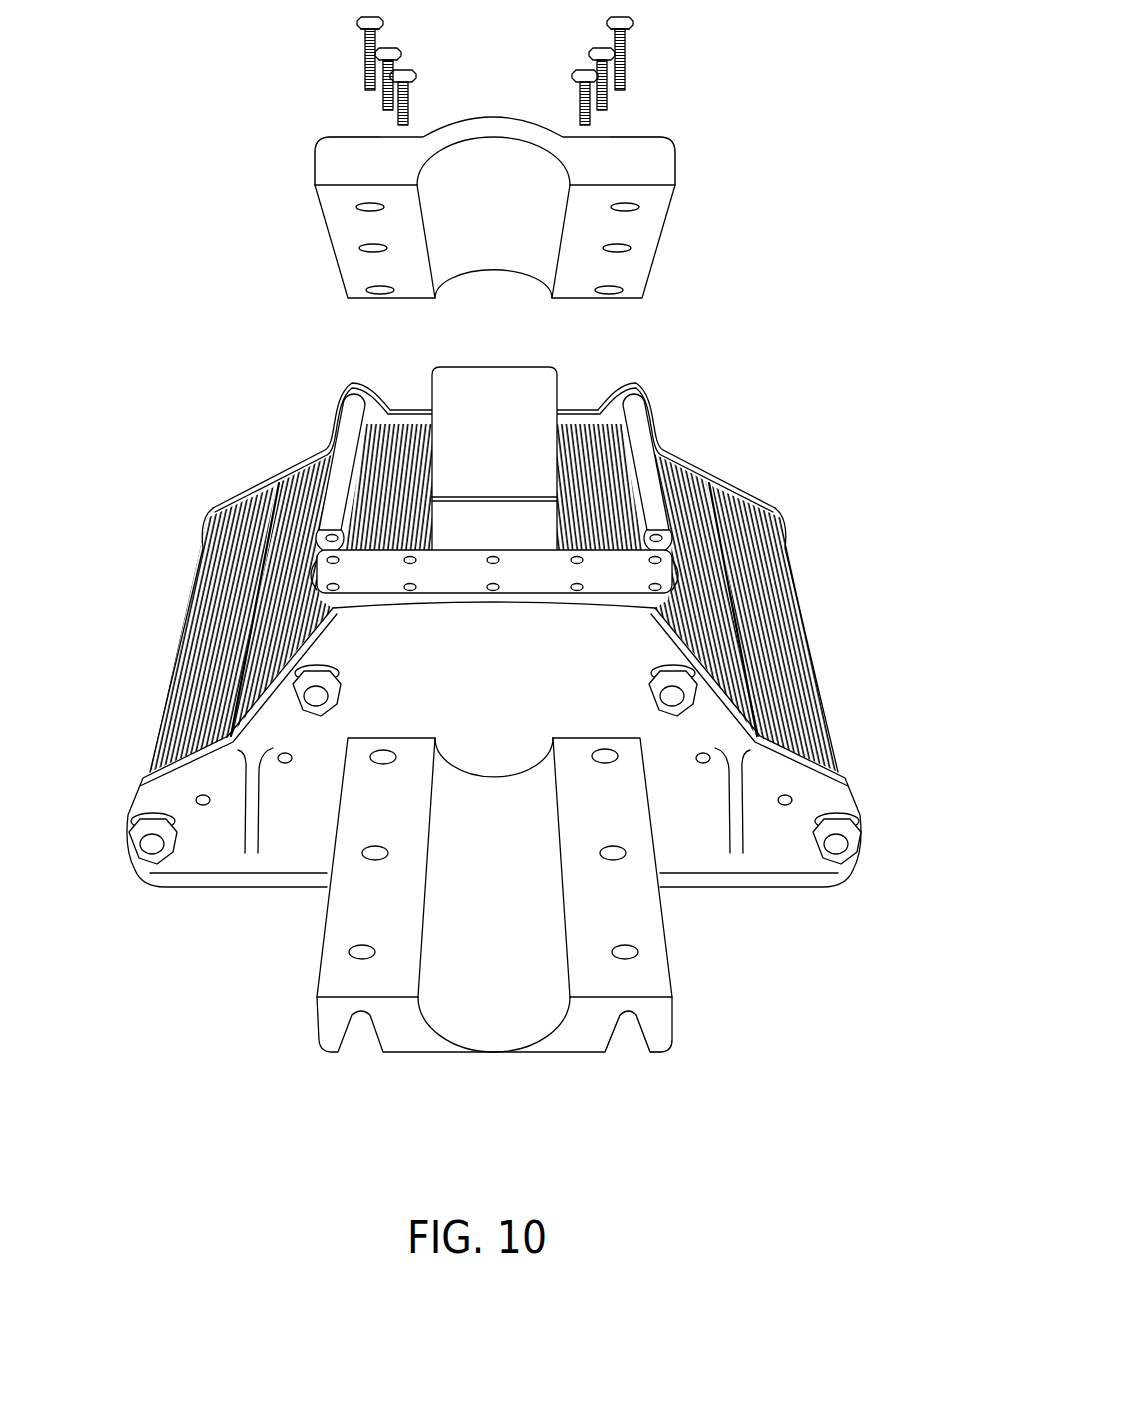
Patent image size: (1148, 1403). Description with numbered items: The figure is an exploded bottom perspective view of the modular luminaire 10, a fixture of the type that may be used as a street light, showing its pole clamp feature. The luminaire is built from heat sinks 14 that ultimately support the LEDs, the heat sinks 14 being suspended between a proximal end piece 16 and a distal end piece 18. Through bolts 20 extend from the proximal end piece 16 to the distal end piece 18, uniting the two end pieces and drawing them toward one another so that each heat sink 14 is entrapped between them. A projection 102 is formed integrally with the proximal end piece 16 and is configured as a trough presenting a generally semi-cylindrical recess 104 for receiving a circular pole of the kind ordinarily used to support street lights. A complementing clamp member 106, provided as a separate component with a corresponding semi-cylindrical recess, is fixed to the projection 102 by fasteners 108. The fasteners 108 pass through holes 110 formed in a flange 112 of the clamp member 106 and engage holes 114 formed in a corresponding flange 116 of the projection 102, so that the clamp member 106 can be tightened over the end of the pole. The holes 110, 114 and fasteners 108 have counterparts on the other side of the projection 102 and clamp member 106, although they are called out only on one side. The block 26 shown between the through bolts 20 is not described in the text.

The modular luminaire 10 is at (515, 458).
The heat sinks 14 is at (302, 507).
The proximal end piece 16 is at (843, 782).
The distal end piece 18 is at (707, 478).
The through bolts 20 is at (345, 462).
The central mounting block 26 is at (512, 400).
The projection 102 is at (499, 945).
The semi-cylindrical recess 104 is at (503, 1024).
The clamp member 106 is at (481, 186).
The fasteners 108 is at (593, 118).
The holes 110 is at (609, 291).
The flange 112 is at (337, 165).
The holes 114 is at (605, 757).
The flange 116 is at (672, 1035).